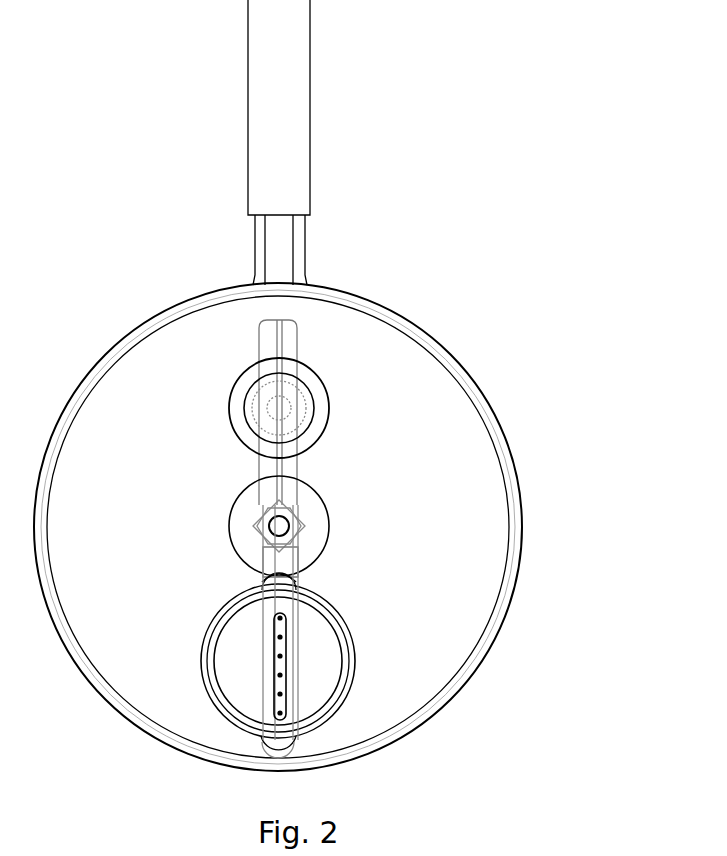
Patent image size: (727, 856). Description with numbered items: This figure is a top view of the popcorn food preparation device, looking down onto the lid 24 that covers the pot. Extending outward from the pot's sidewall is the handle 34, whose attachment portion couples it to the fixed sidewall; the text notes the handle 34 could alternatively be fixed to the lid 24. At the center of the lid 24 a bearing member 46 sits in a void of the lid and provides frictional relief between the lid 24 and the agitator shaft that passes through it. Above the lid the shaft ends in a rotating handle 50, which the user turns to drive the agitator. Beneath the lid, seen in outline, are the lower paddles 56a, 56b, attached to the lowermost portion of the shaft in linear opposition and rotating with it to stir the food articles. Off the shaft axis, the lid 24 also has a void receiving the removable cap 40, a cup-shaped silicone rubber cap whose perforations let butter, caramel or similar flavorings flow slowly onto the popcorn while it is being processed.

The handle 34 is at (310, 45).
The lid 24 is at (497, 500).
The rotating handle 50 is at (330, 408).
The lower paddle 56a is at (297, 470).
The bearing member 46 is at (329, 528).
The removable cap 40 is at (346, 655).
The lower paddle 56b is at (264, 672).